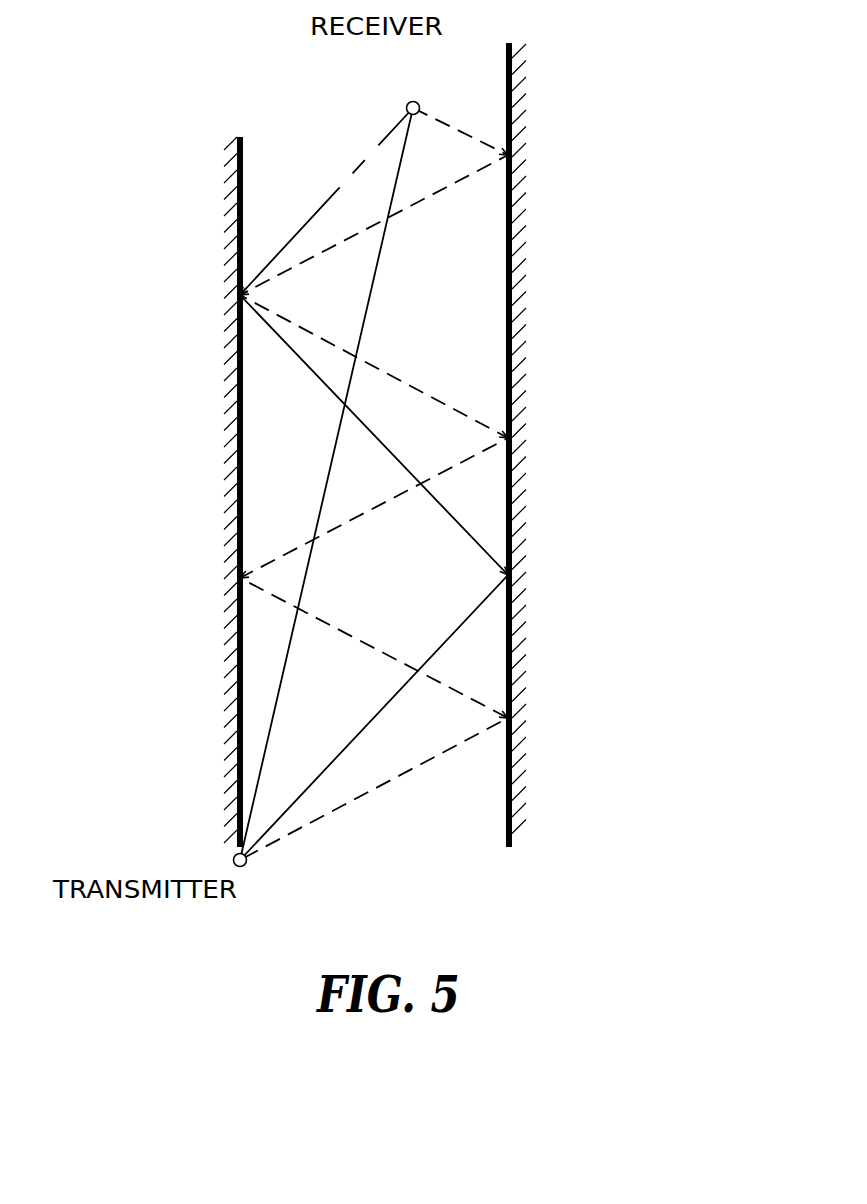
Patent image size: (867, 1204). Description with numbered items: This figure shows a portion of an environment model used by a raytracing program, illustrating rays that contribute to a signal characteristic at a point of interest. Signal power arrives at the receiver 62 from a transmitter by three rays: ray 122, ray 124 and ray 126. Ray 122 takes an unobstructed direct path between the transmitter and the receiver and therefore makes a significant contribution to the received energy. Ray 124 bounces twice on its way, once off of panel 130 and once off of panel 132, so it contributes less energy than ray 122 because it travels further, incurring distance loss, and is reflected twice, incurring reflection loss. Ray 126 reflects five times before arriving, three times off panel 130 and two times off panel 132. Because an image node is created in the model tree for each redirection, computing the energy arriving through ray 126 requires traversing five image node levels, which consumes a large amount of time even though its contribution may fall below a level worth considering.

The receiver 62 is at (406, 108).
The ray 122 is at (378, 271).
The ray 124 is at (334, 196).
The ray 126 is at (438, 118).
The panel 130 is at (508, 42).
The panel 132 is at (238, 137).